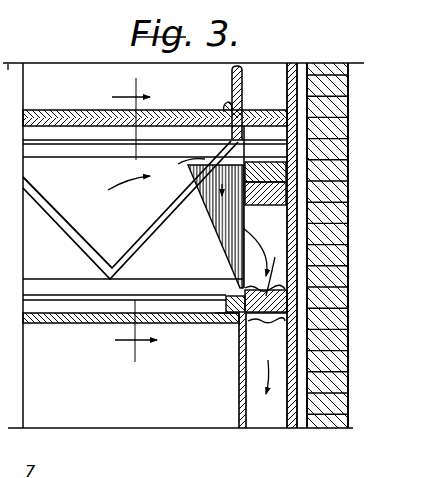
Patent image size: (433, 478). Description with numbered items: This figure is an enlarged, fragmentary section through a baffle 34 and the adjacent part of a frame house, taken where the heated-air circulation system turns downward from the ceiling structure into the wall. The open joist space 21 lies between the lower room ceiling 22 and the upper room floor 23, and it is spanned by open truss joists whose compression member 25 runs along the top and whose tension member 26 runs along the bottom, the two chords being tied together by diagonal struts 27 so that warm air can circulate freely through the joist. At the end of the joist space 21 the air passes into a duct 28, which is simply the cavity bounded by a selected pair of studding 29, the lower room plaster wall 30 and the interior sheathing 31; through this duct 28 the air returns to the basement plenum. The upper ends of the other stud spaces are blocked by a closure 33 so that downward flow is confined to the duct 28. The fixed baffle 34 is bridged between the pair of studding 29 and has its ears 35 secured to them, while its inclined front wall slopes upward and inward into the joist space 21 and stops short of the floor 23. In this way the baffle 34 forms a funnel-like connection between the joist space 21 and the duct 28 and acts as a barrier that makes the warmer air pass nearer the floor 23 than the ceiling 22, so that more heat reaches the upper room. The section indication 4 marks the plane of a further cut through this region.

The section line 4- 4 is at (138, 220).
The joist space 21 is at (133, 262).
The lower room ceiling 22 is at (82, 319).
The upper room floor 23 is at (71, 122).
The compression member 25 is at (93, 135).
The tension member 26 is at (200, 308).
The strut 27 is at (122, 222).
The duct 28 is at (271, 245).
The studding 29 is at (253, 370).
The lower room plaster wall 30 is at (237, 398).
The interior sheathing 31 is at (288, 417).
The closure 33 is at (265, 270).
The baffle 34 is at (215, 228).
The ear 35 is at (240, 215).